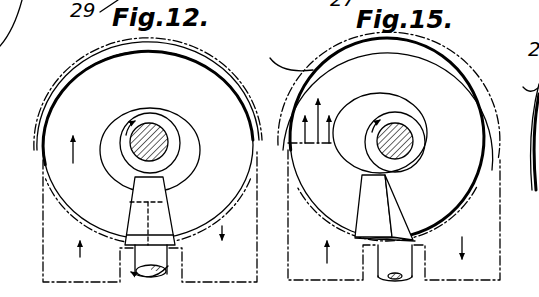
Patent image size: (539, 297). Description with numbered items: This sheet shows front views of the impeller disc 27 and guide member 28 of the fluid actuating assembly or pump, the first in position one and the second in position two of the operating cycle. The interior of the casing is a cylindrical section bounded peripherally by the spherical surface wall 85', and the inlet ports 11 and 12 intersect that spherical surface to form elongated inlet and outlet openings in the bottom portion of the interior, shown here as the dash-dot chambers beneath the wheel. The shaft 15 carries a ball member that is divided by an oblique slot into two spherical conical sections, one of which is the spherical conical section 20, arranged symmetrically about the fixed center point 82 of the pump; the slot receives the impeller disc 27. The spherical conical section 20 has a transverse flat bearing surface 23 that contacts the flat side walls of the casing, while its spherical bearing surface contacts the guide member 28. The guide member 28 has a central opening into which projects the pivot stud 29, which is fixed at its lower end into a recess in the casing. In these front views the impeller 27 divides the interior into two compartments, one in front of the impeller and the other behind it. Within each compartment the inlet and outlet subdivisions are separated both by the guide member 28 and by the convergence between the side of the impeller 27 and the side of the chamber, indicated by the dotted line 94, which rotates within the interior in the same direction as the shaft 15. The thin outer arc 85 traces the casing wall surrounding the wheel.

In FIG. 12, the inlet port 11 is at (78, 278).
In FIG. 15, the inlet port 11 is at (340, 267).
In FIG. 12, the inlet port 12 is at (213, 288).
In FIG. 15, the inlet port 12 is at (473, 270).
In FIG. 12, the shaft 15 is at (157, 138).
In FIG. 15, the shaft 15 is at (372, 138).
In FIG. 12, the spherical conical section 20 is at (125, 170).
In FIG. 15, the spherical conical section 20 is at (352, 158).
In FIG. 12, the transverse flat bearing surface 23 is at (120, 134).
In FIG. 15, the transverse flat bearing surface 23 is at (393, 118).
In FIG. 12, the impeller disc 27 is at (97, 72).
In FIG. 15, the impeller disc 27 is at (423, 65).
In FIG. 12, the guide member 28 is at (160, 222).
In FIG. 15, the guide member 28 is at (383, 212).
In FIG. 12, the pivot stud 29 is at (167, 262).
In FIG. 15, the pivot stud 29 is at (395, 258).
In FIG. 12, the fixed center point 82 is at (168, 146).
In FIG. 15, the fixed center point 82 is at (410, 140).
In FIG. 12, the casing wall 85 is at (148, 86).
In FIG. 12, the peripheral spherical surface wall 85' is at (156, 141).
In FIG. 15, the peripheral spherical surface wall 85' is at (400, 136).
In FIG. 12, the dotted line 94 is at (147, 217).
In FIG. 15, the dotted line 94 is at (313, 143).